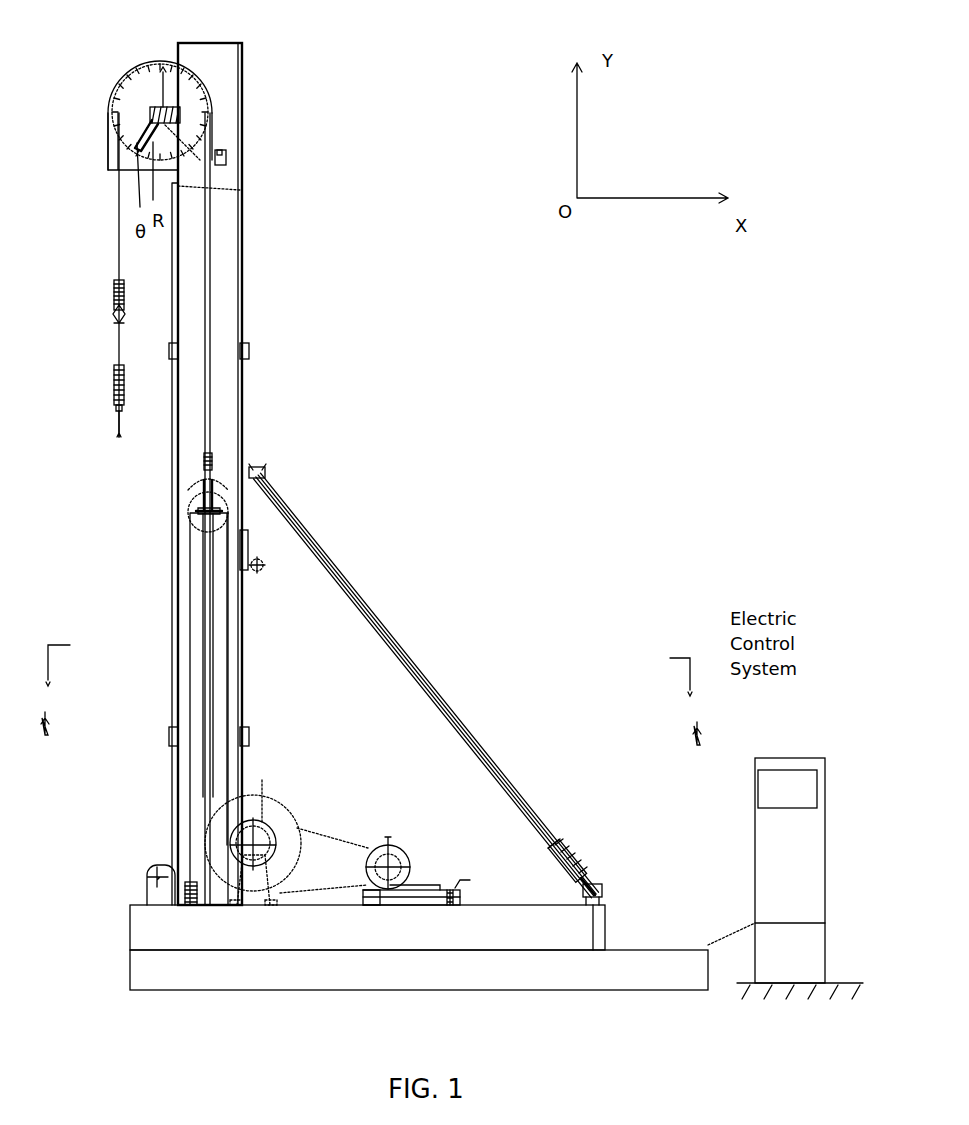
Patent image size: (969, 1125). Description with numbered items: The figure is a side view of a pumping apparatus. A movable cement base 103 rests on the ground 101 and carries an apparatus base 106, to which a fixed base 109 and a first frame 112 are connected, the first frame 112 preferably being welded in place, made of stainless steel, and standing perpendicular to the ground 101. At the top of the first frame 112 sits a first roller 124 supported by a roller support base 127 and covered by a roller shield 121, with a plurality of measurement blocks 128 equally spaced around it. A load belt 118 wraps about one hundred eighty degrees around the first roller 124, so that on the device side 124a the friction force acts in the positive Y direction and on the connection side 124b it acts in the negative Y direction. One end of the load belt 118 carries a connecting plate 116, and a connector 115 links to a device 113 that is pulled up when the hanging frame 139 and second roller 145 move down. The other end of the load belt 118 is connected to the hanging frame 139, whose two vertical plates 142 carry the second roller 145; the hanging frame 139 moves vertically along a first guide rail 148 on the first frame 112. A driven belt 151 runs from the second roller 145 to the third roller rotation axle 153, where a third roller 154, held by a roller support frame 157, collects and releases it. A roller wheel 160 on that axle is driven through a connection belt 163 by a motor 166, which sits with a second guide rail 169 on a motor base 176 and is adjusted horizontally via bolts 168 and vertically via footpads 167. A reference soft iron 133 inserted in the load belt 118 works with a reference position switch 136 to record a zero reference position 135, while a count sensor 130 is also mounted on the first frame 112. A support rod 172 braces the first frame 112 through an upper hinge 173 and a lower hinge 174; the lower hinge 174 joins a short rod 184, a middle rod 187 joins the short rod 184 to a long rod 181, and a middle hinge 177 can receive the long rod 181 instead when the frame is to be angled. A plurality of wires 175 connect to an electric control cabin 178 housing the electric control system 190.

The ground 101 is at (740, 990).
The movable cement base 103 is at (130, 970).
The apparatus base 106 is at (130, 925).
The fixed base 109 is at (194, 892).
The first frame 112 is at (177, 715).
The device 113 is at (119, 439).
The connector 115 is at (114, 385).
The connecting plate 116 is at (113, 300).
The load belt 118 is at (118, 245).
The roller shield 121 is at (108, 142).
The first roller 124 is at (122, 95).
The device side 124a is at (112, 125).
The connection side 124b is at (212, 110).
The roller support base 127 is at (158, 105).
The measurement blocks 128 is at (160, 70).
The count sensor 130 is at (165, 90).
The reference soft iron 133 is at (212, 130).
The zero reference position 135 is at (212, 168).
The reference position switch 136 is at (228, 153).
The hanging frame 139 is at (208, 455).
The vertical plates 142 is at (222, 492).
The second roller 145 is at (230, 502).
The first guide rail 148 is at (216, 555).
The driven belt 151 is at (229, 606).
The third roller rotation axle 153 is at (248, 858).
The third roller 154 is at (262, 822).
The roller support frame 157 is at (272, 823).
The roller wheel 160 is at (298, 860).
The connection belt 163 is at (410, 850).
The motor 166 is at (460, 890).
The footpads 167 is at (448, 906).
The bolts 168 is at (378, 893).
The second guide rail 169 is at (458, 893).
The support rod 172 is at (560, 848).
The upper hinge 173 is at (250, 470).
The lower hinge 174 is at (605, 893).
The wires 175 is at (728, 933).
The motor base 176 is at (418, 896).
The middle hinge 177 is at (285, 548).
The electric control cabin 178 is at (775, 898).
The long rod 181 is at (430, 674).
The short rod 184 is at (598, 878).
The middle rod 187 is at (592, 862).
The electric control system 190 is at (787, 770).